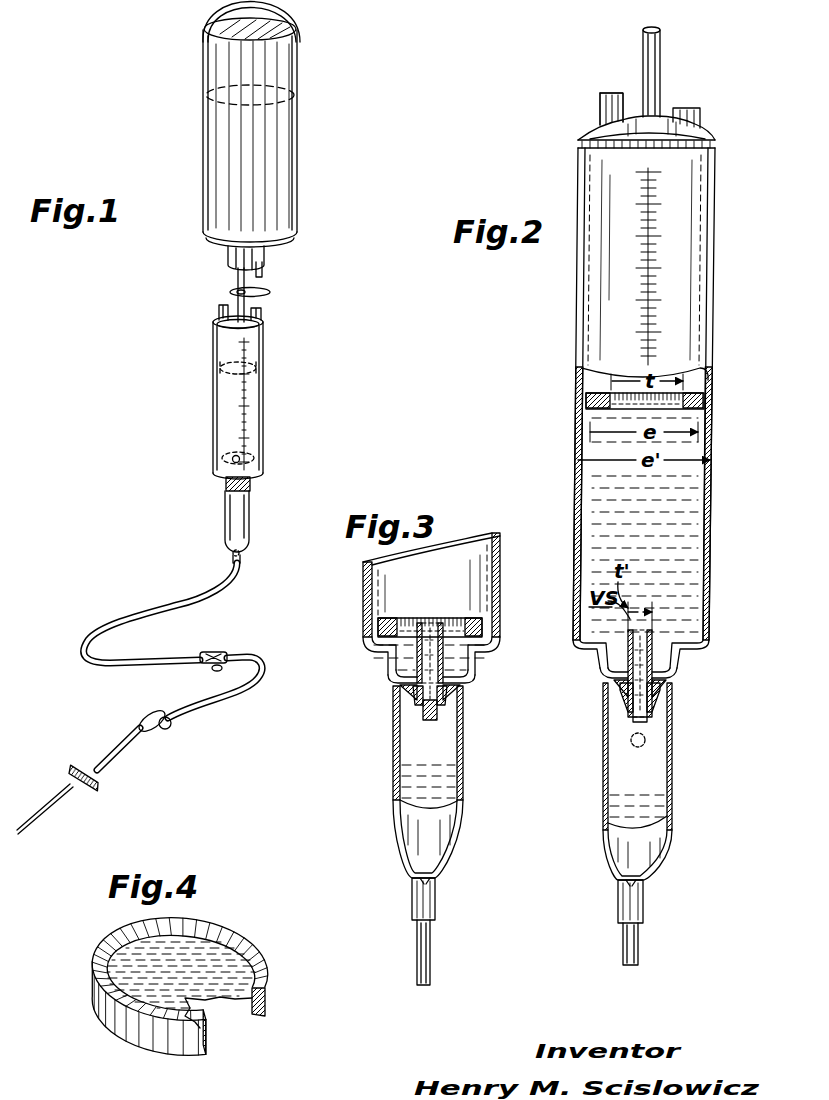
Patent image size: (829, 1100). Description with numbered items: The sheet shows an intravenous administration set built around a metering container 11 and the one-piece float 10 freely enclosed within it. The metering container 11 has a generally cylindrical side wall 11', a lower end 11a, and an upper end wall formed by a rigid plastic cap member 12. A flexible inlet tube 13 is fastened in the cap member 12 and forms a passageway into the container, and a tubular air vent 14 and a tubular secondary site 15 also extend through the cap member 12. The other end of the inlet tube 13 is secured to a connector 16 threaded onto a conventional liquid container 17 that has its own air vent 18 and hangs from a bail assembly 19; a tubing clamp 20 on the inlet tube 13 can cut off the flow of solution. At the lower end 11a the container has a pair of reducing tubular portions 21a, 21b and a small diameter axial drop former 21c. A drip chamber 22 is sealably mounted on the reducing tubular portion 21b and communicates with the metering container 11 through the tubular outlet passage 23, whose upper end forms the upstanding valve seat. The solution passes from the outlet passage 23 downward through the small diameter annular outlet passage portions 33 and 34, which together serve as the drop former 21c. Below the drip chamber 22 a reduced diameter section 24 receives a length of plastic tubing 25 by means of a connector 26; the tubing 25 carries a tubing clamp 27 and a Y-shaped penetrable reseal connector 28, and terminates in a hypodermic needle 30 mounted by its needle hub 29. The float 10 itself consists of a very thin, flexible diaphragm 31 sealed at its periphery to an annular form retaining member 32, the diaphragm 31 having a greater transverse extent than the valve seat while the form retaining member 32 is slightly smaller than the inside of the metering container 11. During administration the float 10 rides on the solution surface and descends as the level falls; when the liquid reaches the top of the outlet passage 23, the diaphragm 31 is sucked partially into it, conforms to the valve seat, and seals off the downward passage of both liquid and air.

In FIG. 1, the float 10 is at (256, 366).
In FIG. 2, the float 10 is at (638, 390).
In FIG. 3, the float 10 is at (455, 612).
In FIG. 4, the float 10 is at (106, 938).
In FIG. 1, the metering container 11 is at (200, 397).
In FIG. 2, the metering container 11 is at (670, 394).
In FIG. 3, the metering container 11 is at (447, 577).
In FIG. 2, the side wall 11' is at (554, 471).
In FIG. 3, the lower end 11a is at (385, 673).
In FIG. 1, the cap member 12 is at (258, 326).
In FIG. 2, the cap member 12 is at (602, 133).
In FIG. 1, the inlet tube 13 is at (248, 306).
In FIG. 2, the inlet tube 13 is at (656, 58).
In FIG. 1, the air vent 14 is at (260, 309).
In FIG. 2, the air vent 14 is at (700, 109).
In FIG. 1, the secondary site 15 is at (222, 305).
In FIG. 2, the secondary site 15 is at (606, 96).
In FIG. 1, the connector 16 is at (264, 257).
In FIG. 1, the liquid container 17 is at (282, 152).
In FIG. 1, the air vent 18 is at (265, 267).
In FIG. 1, the bail assembly 19 is at (303, 12).
In FIG. 1, the tubing clamp 20 is at (232, 292).
In FIG. 2, the reducing tubular portion 21a is at (689, 657).
In FIG. 3, the reducing tubular portion 21a is at (471, 668).
In FIG. 2, the reducing tubular portion 21b is at (681, 684).
In FIG. 3, the reducing tubular portion 21b is at (464, 683).
In FIG. 1, the drop former 21c is at (251, 483).
In FIG. 2, the drop former 21c is at (655, 711).
In FIG. 3, the drop former 21c is at (418, 718).
In FIG. 1, the drip chamber 22 is at (226, 500).
In FIG. 2, the drip chamber 22 is at (672, 787).
In FIG. 3, the drip chamber 22 is at (400, 795).
In FIG. 1, the outlet passage 23 is at (243, 461).
In FIG. 2, the outlet passage 23 is at (643, 630).
In FIG. 3, the outlet passage 23 is at (424, 640).
In FIG. 1, the reduced diameter section 24 is at (232, 556).
In FIG. 2, the reduced diameter section 24 is at (644, 884).
In FIG. 3, the reduced diameter section 24 is at (438, 879).
In FIG. 1, the plastic tubing 25 is at (176, 604).
In FIG. 2, the plastic tubing 25 is at (639, 950).
In FIG. 3, the plastic tubing 25 is at (429, 966).
In FIG. 1, the connector 26 is at (243, 558).
In FIG. 2, the connector 26 is at (644, 916).
In FIG. 3, the connector 26 is at (436, 912).
In FIG. 1, the tubing clamp 27 is at (214, 651).
In FIG. 1, the penetrable reseal connector 28 is at (147, 716).
In FIG. 1, the needle hub 29 is at (92, 783).
In FIG. 1, the hypodermic needle 30 is at (45, 818).
In FIG. 2, the diaphragm 31 is at (597, 398).
In FIG. 3, the diaphragm 31 is at (428, 626).
In FIG. 4, the diaphragm 31 is at (205, 1000).
In FIG. 2, the form retaining member 32 is at (693, 398).
In FIG. 3, the form retaining member 32 is at (387, 618).
In FIG. 4, the form retaining member 32 is at (262, 963).
In FIG. 2, the outlet passage portion 33 is at (612, 692).
In FIG. 3, the outlet passage portion 33 is at (418, 691).
In FIG. 2, the outlet passage portion 34 is at (633, 718).
In FIG. 3, the outlet passage portion 34 is at (429, 713).